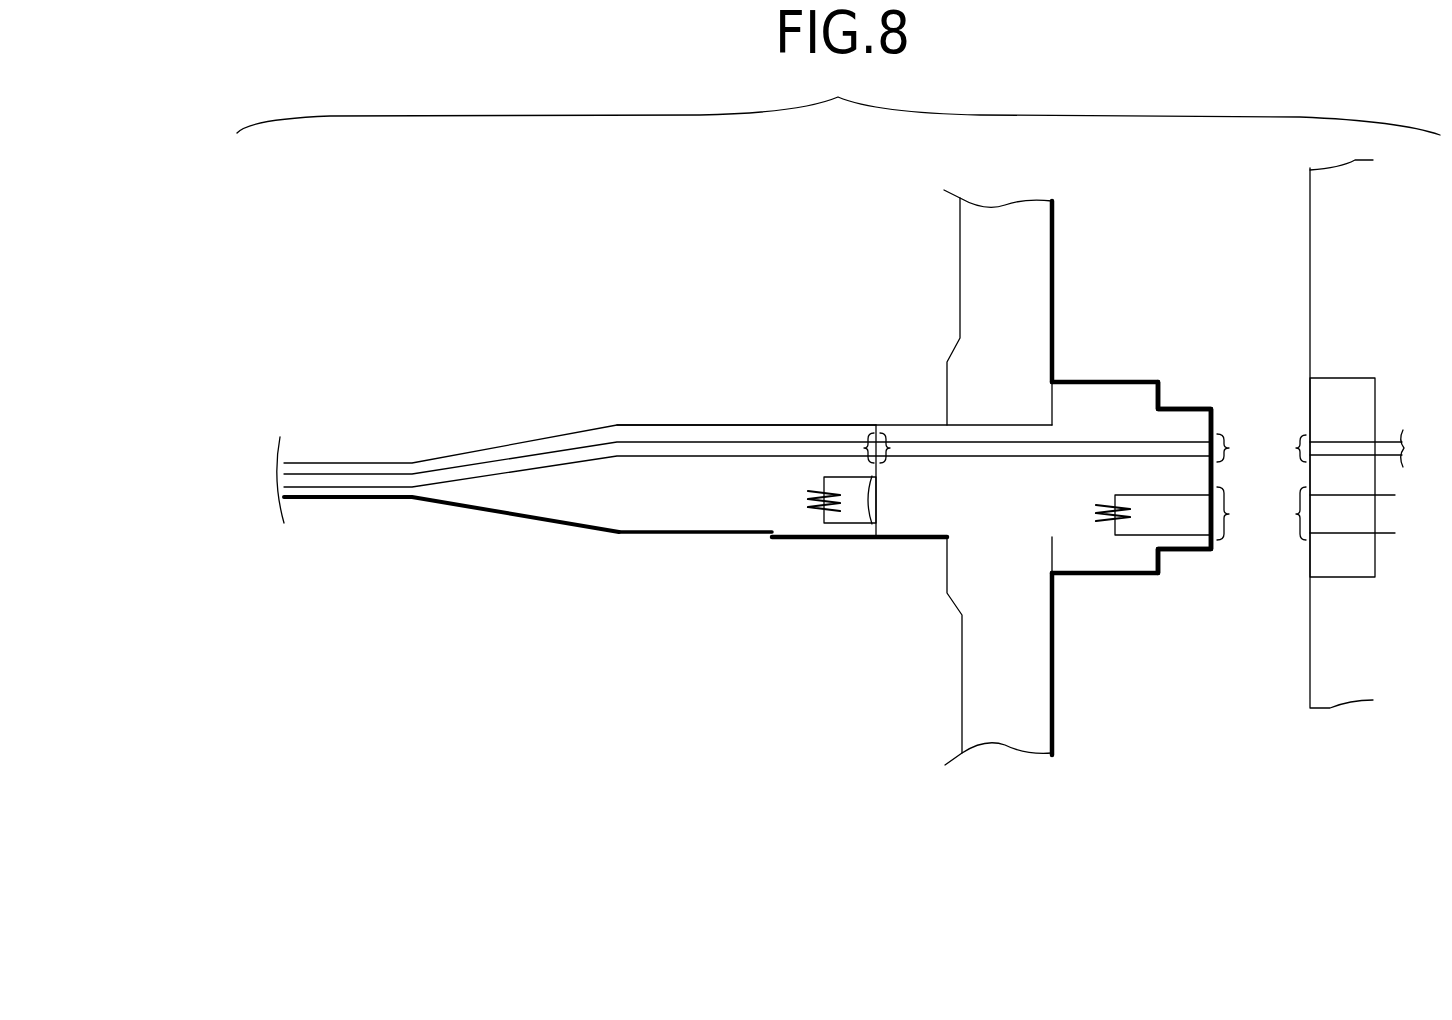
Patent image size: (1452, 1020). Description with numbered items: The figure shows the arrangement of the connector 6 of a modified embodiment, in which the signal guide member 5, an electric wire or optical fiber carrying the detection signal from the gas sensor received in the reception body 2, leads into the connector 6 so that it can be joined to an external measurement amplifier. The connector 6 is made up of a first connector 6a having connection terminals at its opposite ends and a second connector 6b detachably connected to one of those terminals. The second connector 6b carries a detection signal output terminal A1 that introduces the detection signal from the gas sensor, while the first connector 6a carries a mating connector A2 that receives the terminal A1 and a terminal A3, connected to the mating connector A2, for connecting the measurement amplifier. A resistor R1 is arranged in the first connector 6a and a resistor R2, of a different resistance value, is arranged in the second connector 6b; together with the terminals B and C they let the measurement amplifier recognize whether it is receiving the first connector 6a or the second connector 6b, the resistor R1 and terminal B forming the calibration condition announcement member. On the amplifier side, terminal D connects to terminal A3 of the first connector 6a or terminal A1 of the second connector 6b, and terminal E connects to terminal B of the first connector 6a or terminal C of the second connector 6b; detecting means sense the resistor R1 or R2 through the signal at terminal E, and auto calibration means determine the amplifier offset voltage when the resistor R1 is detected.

The reception body 2 is at (1043, 224).
The signal guide member 5 is at (683, 440).
The connector 6 is at (876, 320).
The first connector 6a is at (1130, 392).
The second connector 6b is at (770, 420).
The detection signal output terminal A1 is at (861, 448).
The mating connector A2 is at (893, 448).
The terminal A3 is at (1231, 448).
The terminal B is at (1231, 514).
The terminal C is at (866, 500).
The terminal D is at (1297, 448).
The terminal E is at (1297, 514).
The resistor R1 is at (1131, 515).
The resistor R2 is at (819, 500).